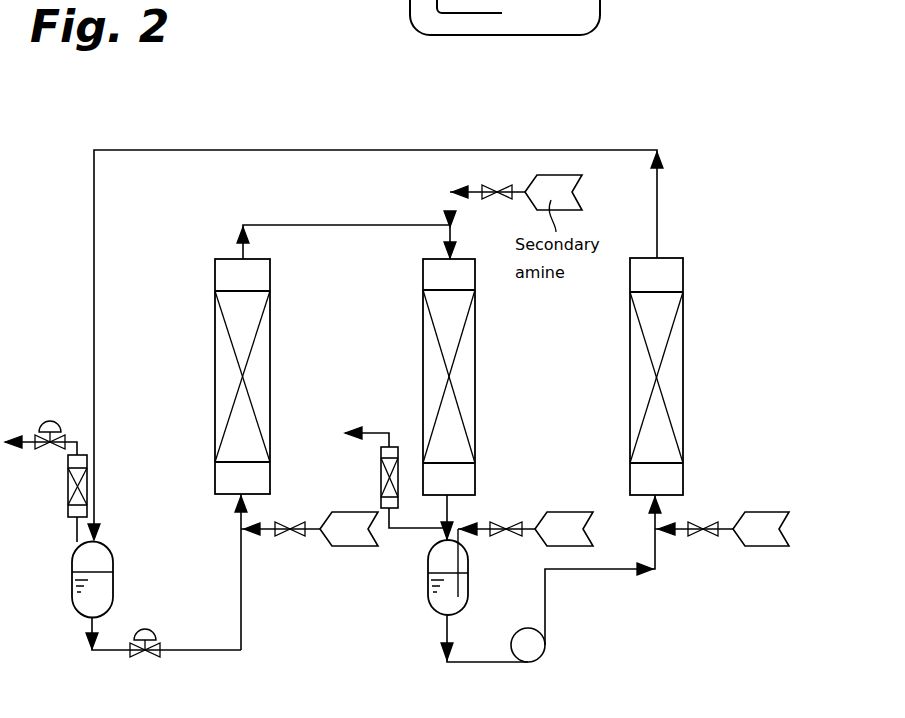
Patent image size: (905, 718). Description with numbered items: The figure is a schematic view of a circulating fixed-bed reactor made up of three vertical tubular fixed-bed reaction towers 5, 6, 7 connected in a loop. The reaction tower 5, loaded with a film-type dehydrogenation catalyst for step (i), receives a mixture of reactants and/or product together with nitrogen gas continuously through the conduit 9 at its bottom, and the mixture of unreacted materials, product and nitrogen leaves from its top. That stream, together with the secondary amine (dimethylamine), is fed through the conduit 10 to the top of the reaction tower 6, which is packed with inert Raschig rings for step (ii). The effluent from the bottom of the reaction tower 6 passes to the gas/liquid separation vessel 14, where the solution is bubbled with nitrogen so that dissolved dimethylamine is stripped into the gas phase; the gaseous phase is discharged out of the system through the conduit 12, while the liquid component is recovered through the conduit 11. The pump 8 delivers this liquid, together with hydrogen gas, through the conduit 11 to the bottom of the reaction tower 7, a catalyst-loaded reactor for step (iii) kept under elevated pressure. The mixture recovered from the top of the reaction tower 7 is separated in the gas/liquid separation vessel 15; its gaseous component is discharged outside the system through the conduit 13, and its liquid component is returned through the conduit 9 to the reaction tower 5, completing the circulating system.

The reaction tower 5 is at (259, 350).
The reaction tower 6 is at (465, 347).
The reaction tower 7 is at (673, 337).
The pump 8 is at (534, 650).
The conduit 9 is at (241, 545).
The conduit 10 is at (448, 232).
The conduit 11 is at (660, 555).
The conduit 12 is at (412, 533).
The conduit 13 is at (72, 440).
The gas/liquid separation vessel 14 is at (430, 600).
The gas/liquid separation vessel 15 is at (100, 595).